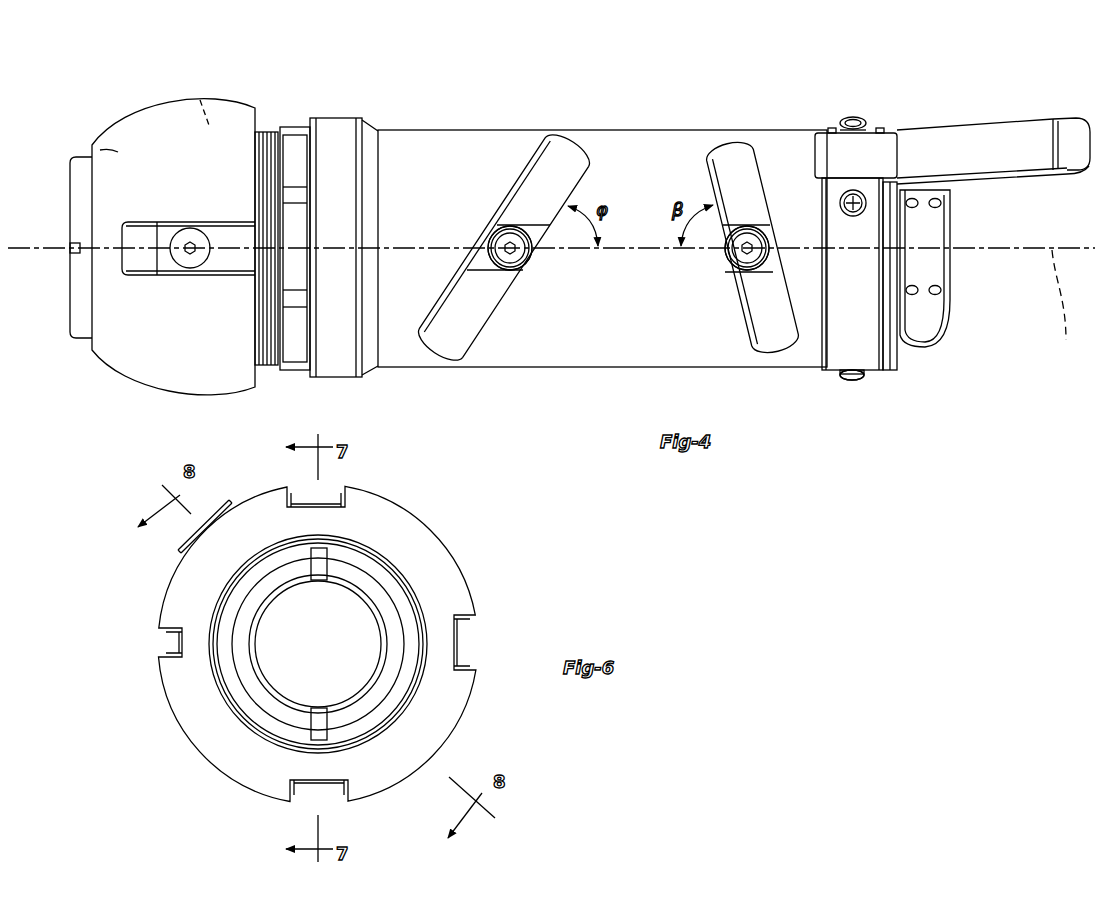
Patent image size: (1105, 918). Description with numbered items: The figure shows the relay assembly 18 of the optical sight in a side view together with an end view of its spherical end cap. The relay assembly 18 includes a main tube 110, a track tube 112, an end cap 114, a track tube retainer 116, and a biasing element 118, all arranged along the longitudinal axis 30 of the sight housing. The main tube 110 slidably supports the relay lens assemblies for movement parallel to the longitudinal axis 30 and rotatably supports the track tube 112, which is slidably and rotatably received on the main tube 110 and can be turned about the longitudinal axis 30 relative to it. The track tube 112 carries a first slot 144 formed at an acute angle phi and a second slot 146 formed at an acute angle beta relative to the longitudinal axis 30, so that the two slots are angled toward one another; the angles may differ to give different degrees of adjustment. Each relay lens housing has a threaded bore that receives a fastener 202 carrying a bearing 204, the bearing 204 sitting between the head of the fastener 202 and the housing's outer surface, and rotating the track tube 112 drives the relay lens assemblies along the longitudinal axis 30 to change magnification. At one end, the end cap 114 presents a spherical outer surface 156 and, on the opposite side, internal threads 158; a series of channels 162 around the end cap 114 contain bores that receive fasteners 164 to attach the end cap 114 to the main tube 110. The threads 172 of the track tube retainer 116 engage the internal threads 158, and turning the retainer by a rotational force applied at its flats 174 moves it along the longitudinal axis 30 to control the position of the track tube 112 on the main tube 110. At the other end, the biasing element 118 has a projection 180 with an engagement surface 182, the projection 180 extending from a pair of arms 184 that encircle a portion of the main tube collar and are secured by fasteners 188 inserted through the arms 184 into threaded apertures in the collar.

In FIG. 4, the relay assembly 18 is at (444, 118).
In FIG. 4, the longitudinal axis 30 is at (1061, 310).
In FIG. 4, the main tube 110 is at (548, 186).
In FIG. 4, the track tube 112 is at (412, 128).
In FIG. 4, the end cap 114 is at (152, 104).
In FIG. 6, the end cap 114 is at (448, 533).
In FIG. 4, the track tube retainer 116 is at (293, 126).
In FIG. 4, the biasing element 118 is at (956, 124).
In FIG. 4, the first slot 144 is at (573, 147).
In FIG. 4, the second slot 146 is at (730, 148).
In FIG. 4, the spherical outer surface 156 is at (132, 150).
In FIG. 6, the spherical outer surface 156 is at (432, 562).
In FIG. 4, the internal threads 158 is at (200, 100).
In FIG. 4, the channels 162 is at (230, 262).
In FIG. 6, the channels 162 is at (325, 485).
In FIG. 4, the fasteners 164 is at (190, 262).
In FIG. 4, the threads 172 is at (265, 370).
In FIG. 4, the flats 174 is at (360, 222).
In FIG. 4, the projection 180 is at (984, 132).
In FIG. 4, the engagement surface 182 is at (1050, 138).
In FIG. 4, the arms 184 is at (868, 340).
In FIG. 4, the fasteners 188 is at (866, 203).
In FIG. 4, the fastener 202 is at (514, 258).
In FIG. 4, the bearing 204 is at (504, 228).